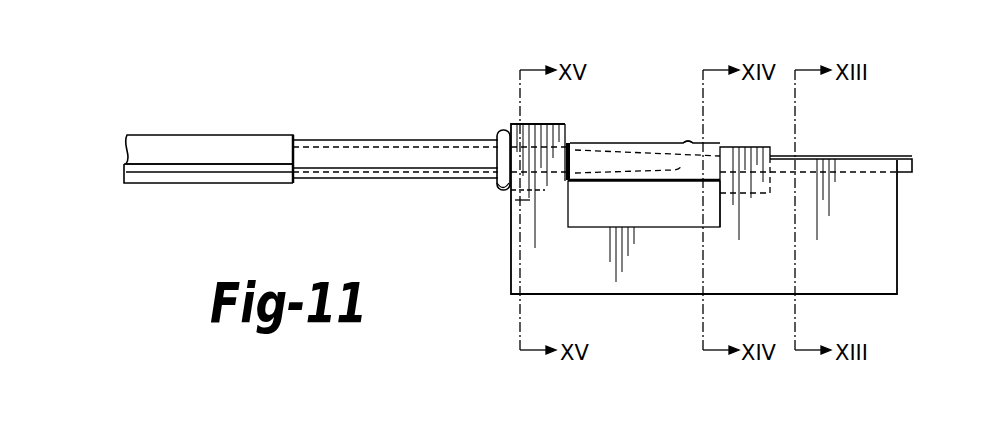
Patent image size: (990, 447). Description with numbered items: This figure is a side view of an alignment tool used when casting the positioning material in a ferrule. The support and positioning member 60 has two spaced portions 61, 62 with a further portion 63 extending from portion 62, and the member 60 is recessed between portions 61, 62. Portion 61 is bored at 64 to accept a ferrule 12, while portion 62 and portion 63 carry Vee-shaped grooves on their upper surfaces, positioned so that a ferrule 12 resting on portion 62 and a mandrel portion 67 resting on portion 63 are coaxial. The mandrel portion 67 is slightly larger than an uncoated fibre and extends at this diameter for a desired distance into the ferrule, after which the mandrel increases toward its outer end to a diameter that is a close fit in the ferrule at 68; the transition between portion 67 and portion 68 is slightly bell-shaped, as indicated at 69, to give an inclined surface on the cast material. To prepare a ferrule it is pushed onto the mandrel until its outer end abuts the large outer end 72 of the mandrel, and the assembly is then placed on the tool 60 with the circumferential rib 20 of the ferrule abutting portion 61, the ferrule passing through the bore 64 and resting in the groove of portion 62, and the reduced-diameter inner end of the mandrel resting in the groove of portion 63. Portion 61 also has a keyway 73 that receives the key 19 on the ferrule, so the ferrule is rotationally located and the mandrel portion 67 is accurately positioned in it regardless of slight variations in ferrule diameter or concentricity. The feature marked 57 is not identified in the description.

The large outer end 72 is at (229, 140).
The mandrel portion 68 is at (383, 147).
The circumferential rib 20 is at (500, 133).
The support and positioning member 60 is at (530, 267).
The portion 61 is at (571, 133).
The bore 64 is at (554, 120).
The ferrule 12 is at (644, 141).
The notch 57 is at (694, 141).
The bell-shaped transition 69 is at (681, 186).
The portion 62 is at (771, 154).
The mandrel portion 67 is at (852, 156).
The portion 63 is at (883, 158).
The key 19 is at (496, 185).
The keyway 73 is at (522, 207).